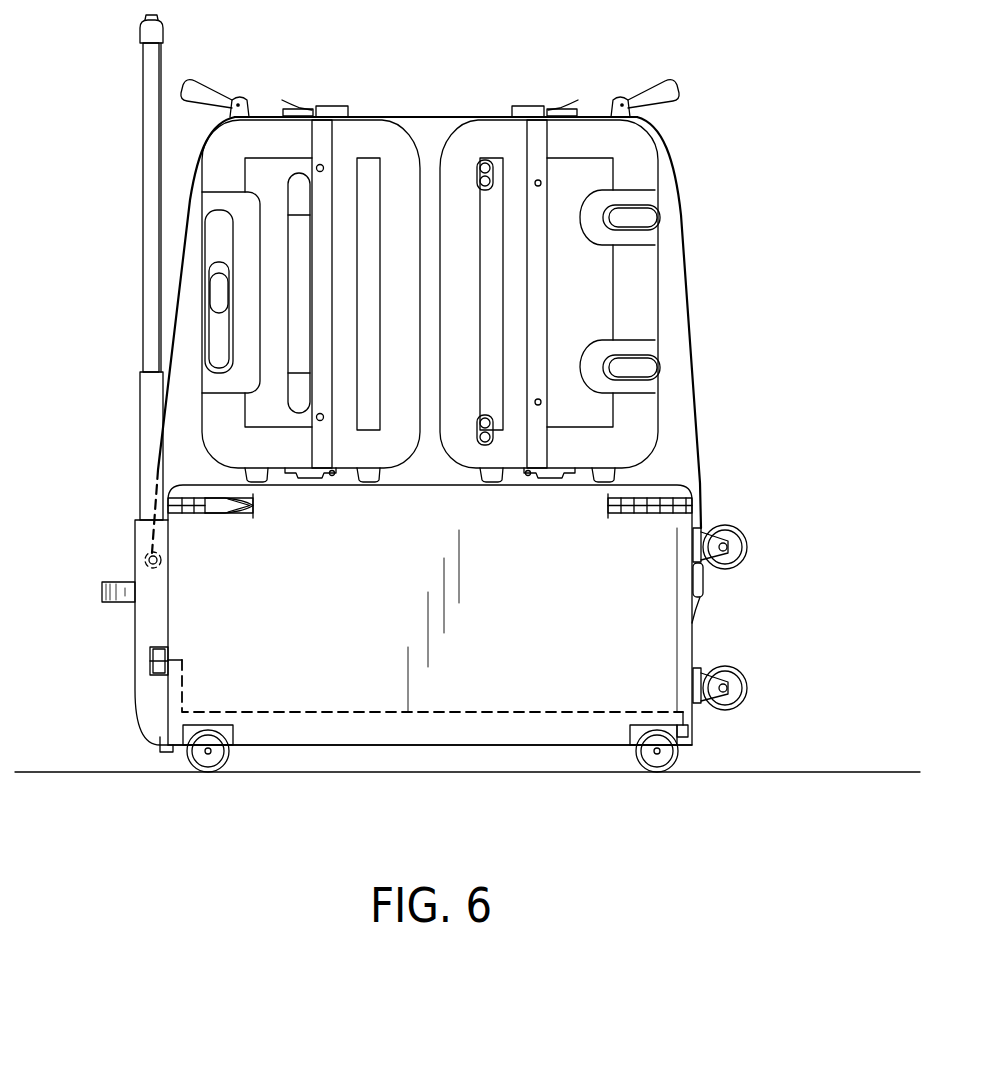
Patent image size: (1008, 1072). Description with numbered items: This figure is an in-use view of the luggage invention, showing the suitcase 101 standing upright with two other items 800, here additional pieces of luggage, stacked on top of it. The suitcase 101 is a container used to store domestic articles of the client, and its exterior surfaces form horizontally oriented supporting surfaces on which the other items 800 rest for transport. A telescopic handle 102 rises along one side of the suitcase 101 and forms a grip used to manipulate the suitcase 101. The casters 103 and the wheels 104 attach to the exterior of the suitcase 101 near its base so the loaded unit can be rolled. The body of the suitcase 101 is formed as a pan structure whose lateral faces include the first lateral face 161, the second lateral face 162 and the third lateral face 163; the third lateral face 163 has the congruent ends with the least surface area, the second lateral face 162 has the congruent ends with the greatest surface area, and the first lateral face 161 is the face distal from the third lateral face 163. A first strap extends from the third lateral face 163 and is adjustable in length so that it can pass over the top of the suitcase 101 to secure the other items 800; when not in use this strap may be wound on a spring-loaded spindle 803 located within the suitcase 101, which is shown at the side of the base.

The other items 800 is at (478, 140).
The telescopic handles 102 is at (140, 356).
The suitcase 101 is at (690, 490).
The spring-loaded spindle 803 is at (143, 563).
The first lateral face 161 is at (692, 637).
The third lateral face 163 is at (168, 712).
The second lateral face 162 is at (385, 727).
The casters 103 is at (208, 770).
The wheels 104 is at (660, 773).